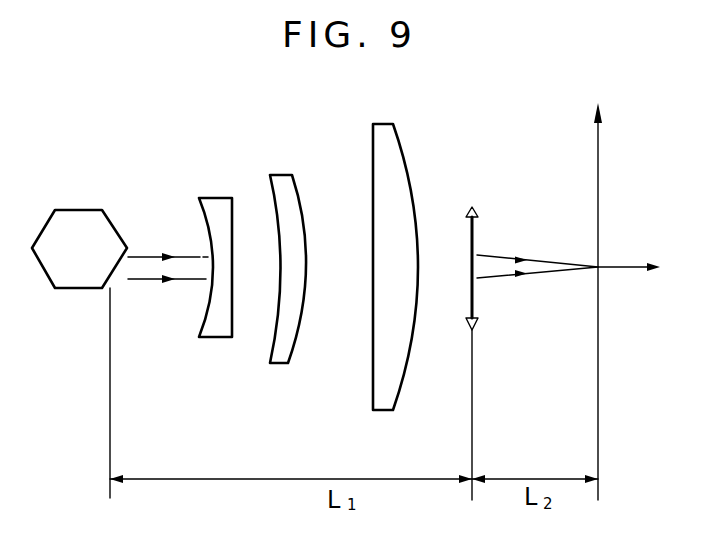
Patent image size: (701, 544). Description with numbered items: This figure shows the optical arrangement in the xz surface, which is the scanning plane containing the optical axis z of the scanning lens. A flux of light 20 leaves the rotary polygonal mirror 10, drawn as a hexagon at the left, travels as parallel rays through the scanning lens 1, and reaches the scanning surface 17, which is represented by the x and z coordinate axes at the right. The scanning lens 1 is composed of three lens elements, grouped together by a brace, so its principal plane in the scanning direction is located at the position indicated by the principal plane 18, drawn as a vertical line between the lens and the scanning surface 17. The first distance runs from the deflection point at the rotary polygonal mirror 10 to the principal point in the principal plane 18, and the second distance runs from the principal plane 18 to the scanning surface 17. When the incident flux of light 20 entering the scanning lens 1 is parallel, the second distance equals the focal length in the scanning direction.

The scanning lens 1 is at (408, 418).
The rotary polygonal mirror 10 is at (96, 209).
The scanning surface 17 is at (600, 397).
The principal plane 18 is at (474, 207).
The flux of light 20 is at (152, 254).